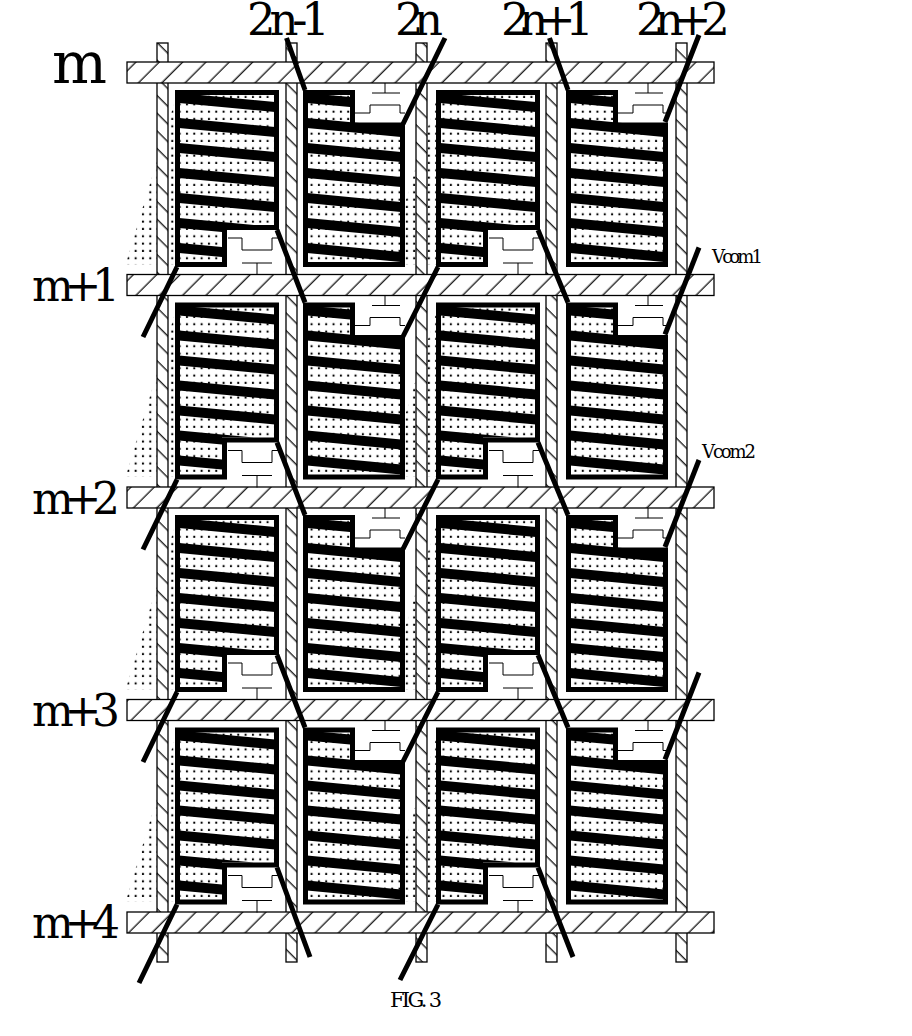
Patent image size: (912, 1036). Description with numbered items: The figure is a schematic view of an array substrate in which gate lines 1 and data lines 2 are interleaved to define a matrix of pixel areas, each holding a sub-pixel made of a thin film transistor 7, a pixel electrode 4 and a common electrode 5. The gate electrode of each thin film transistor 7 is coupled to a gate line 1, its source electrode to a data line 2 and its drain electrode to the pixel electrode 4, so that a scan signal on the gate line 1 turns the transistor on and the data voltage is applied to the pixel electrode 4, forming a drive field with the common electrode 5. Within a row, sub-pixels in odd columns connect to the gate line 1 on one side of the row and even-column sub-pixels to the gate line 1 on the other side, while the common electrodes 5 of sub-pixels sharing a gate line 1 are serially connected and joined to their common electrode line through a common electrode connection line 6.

The gate line 1 is at (657, 726).
The data line 2 is at (676, 571).
The pixel electrode 4 is at (665, 193).
The common electrode 5 is at (762, 512).
The common electrode connection line 6 is at (698, 260).
The thin film transistor 7 is at (598, 298).